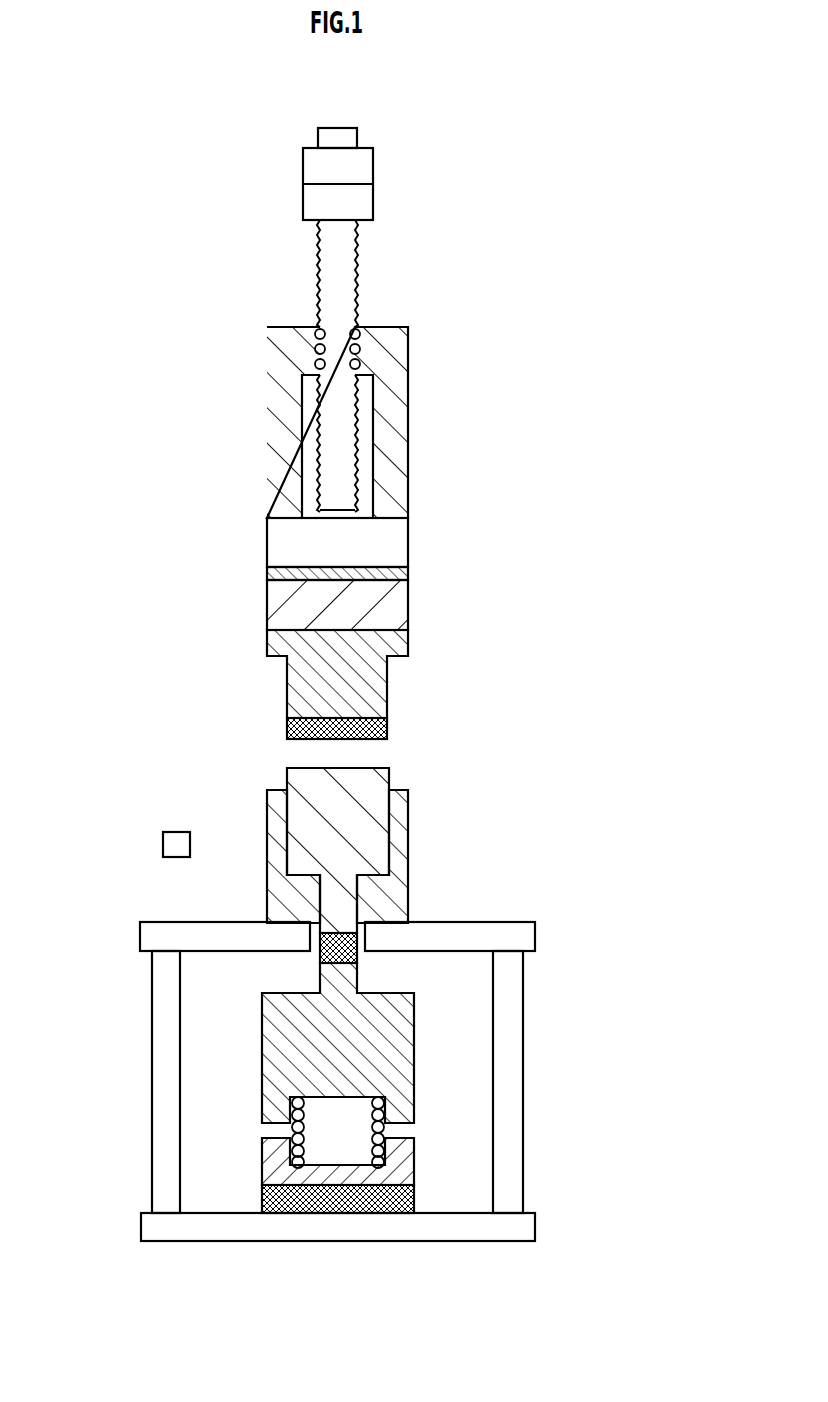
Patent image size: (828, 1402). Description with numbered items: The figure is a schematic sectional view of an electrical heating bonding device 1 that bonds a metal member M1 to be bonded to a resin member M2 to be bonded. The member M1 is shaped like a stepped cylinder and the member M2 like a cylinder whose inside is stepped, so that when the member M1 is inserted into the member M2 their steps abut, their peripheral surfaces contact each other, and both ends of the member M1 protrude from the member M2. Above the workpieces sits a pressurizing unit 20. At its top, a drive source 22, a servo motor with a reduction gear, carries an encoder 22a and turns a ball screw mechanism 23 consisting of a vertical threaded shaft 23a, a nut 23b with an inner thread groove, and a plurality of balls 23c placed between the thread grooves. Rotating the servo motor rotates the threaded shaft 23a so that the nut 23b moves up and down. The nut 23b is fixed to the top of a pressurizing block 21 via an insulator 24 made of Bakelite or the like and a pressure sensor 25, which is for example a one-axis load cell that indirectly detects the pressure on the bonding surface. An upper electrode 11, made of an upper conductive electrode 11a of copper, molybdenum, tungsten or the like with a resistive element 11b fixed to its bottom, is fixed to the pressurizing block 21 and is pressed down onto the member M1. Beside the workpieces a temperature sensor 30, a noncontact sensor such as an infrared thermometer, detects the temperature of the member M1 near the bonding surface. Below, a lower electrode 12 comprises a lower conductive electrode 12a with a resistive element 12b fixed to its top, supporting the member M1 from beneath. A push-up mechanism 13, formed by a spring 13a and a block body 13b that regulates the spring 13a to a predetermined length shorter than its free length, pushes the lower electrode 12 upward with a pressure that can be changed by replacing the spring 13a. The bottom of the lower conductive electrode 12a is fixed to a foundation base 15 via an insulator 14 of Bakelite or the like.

The electrical heating bonding device 1 is at (436, 118).
The pressurizing unit 20 is at (238, 492).
The drive source 22 is at (314, 170).
The encoder 22a is at (320, 134).
The ball screw mechanism 23 is at (266, 321).
The threaded shaft 23a is at (326, 272).
The nut 23b is at (268, 424).
The balls 23c is at (318, 350).
The pressure sensor 25 is at (272, 548).
The insulator 24 is at (268, 573).
The pressurizing block 21 is at (280, 605).
The upper electrode 11 is at (475, 702).
The upper conductive electrode 11a is at (388, 675).
The resistive element 11b is at (388, 727).
The member to be bonded M1 is at (390, 824).
The member to be bonded M2 is at (385, 888).
The temperature sensor 30 is at (163, 845).
The lower electrode 12 is at (432, 983).
The lower conductive electrode 12a is at (262, 1037).
The resistive element 12b is at (320, 962).
The push-up mechanism 13 is at (590, 1100).
The spring 13a is at (392, 1113).
The block body 13b is at (414, 1162).
The insulator 14 is at (262, 1196).
The foundation base 15 is at (225, 1232).